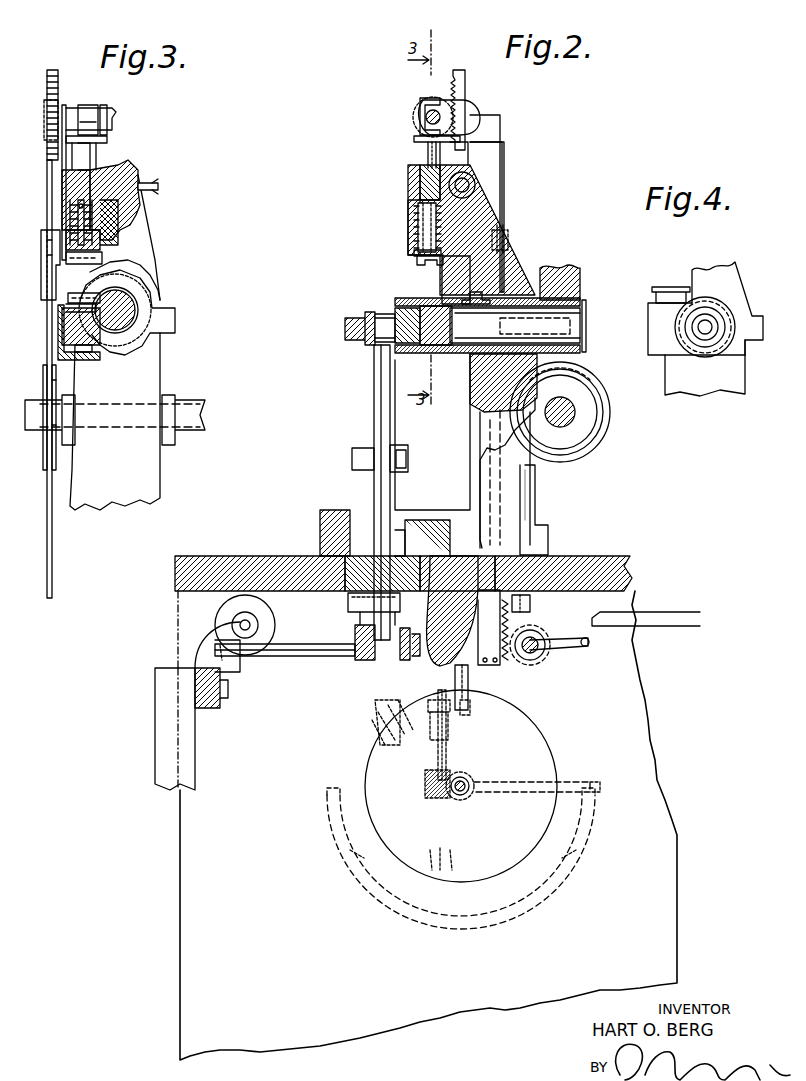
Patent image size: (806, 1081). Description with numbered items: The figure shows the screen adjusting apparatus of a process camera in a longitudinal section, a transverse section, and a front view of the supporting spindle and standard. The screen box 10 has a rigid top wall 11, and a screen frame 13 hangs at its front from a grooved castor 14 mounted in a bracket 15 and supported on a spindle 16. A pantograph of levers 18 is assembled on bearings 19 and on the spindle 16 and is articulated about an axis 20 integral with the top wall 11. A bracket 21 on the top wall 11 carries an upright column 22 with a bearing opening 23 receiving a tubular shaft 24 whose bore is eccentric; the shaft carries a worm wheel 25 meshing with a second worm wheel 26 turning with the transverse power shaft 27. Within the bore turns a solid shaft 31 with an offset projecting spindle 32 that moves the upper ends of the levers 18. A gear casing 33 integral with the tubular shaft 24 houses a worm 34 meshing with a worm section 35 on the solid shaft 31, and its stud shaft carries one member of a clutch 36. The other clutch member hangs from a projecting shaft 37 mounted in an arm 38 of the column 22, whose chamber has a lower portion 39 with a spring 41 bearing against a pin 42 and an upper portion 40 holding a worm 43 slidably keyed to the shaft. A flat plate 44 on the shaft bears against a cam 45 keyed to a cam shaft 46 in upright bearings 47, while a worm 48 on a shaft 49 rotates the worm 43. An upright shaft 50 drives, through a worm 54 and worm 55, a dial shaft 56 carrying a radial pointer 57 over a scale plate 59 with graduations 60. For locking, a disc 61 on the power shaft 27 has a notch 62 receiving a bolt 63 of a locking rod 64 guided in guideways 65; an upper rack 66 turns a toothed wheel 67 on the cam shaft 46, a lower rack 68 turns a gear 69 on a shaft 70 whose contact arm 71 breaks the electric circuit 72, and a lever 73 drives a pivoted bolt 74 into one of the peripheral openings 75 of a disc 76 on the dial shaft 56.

In FIG. 2, the screen box 10 is at (158, 629).
In FIG. 2, the top wall 11 is at (228, 556).
In FIG. 2, the screen frame 13 is at (158, 722).
In FIG. 2, the grooved castor 14 is at (222, 612).
In FIG. 2, the bracket 15 is at (225, 663).
In FIG. 2, the spindle 16 is at (292, 657).
In FIG. 2, the lever 18 is at (373, 412).
In FIG. 2, the bearing 19 is at (405, 460).
In FIG. 2, the axis 20 is at (393, 595).
In FIG. 2, the bracket 21 is at (545, 532).
In FIG. 3, the upright column 22 is at (150, 470).
In FIG. 2, the upright column 22 is at (482, 435).
In FIG. 4, the upright column 22 is at (716, 395).
In FIG. 2, the bearing opening 23 is at (468, 292).
In FIG. 2, the tubular shaft 24 is at (450, 353).
In FIG. 4, the tubular shaft 24 is at (735, 345).
In FIG. 3, the worm wheel 25 is at (150, 296).
In FIG. 2, the worm wheel 25 is at (580, 296).
In FIG. 2, the second worm wheel 26 is at (603, 420).
In FIG. 3, the power shaft 27 is at (192, 405).
In FIG. 2, the power shaft 27 is at (575, 420).
In FIG. 2, the solid shaft 31 is at (572, 318).
In FIG. 4, the solid shaft 31 is at (698, 340).
In FIG. 2, the projecting spindle 32 is at (383, 322).
In FIG. 4, the projecting spindle 32 is at (706, 322).
In FIG. 3, the gear casing 33 is at (62, 352).
In FIG. 4, the gear casing 33 is at (655, 333).
In FIG. 3, the worm 34 is at (70, 338).
In FIG. 2, the worm 34 is at (410, 353).
In FIG. 3, the worm section 35 is at (150, 348).
In FIG. 2, the worm section 35 is at (428, 353).
In FIG. 3, the clutch 36 is at (100, 266).
In FIG. 2, the clutch 36 is at (425, 270).
In FIG. 4, the clutch 36 is at (660, 286).
In FIG. 3, the projecting shaft 37 is at (125, 230).
In FIG. 2, the projecting shaft 37 is at (425, 146).
In FIG. 3, the arm 38 is at (140, 210).
In FIG. 2, the arm 38 is at (500, 200).
In FIG. 4, the arm 38 is at (740, 262).
In FIG. 3, the lower chamber portion 39 is at (70, 205).
In FIG. 2, the lower chamber portion 39 is at (414, 226).
In FIG. 3, the upper chamber portion 40 is at (62, 176).
In FIG. 2, the upper chamber portion 40 is at (415, 188).
In FIG. 3, the spring 41 is at (105, 250).
In FIG. 2, the spring 41 is at (414, 244).
In FIG. 3, the pin 42 is at (78, 218).
In FIG. 2, the pin 42 is at (414, 212).
In FIG. 3, the worm 43 is at (100, 170).
In FIG. 2, the worm 43 is at (418, 175).
In FIG. 3, the flat plate 44 is at (95, 140).
In FIG. 2, the flat plate 44 is at (425, 137).
In FIG. 3, the cam 45 is at (88, 105).
In FIG. 2, the cam 45 is at (468, 108).
In FIG. 3, the cam shaft 46 is at (112, 108).
In FIG. 2, the cam shaft 46 is at (425, 110).
In FIG. 3, the upright bearing 47 is at (64, 120).
In FIG. 2, the upright bearing 47 is at (481, 131).
In FIG. 2, the worm 48 is at (466, 168).
In FIG. 3, the shaft 49 is at (158, 185).
In FIG. 2, the shaft 49 is at (470, 185).
In FIG. 2, the upright shaft 50 is at (446, 731).
In FIG. 2, the worm 54 is at (428, 784).
In FIG. 2, the worm 55 is at (466, 798).
In FIG. 2, the dial shaft 56 is at (462, 778).
In FIG. 2, the radial pointer 57 is at (514, 784).
In FIG. 2, the scale plate 59 is at (328, 812).
In FIG. 2, the graduations 60 is at (370, 880).
In FIG. 3, the disc 61 is at (47, 378).
In FIG. 2, the disc 61 is at (598, 392).
In FIG. 3, the notch 62 is at (47, 392).
In FIG. 2, the notch 62 is at (606, 400).
In FIG. 2, the bolt 63 is at (580, 345).
In FIG. 3, the locking rod 64 is at (47, 505).
In FIG. 2, the locking rod 64 is at (506, 210).
In FIG. 3, the guideway 65 is at (44, 275).
In FIG. 2, the guideway 65 is at (510, 237).
In FIG. 3, the rack 66 is at (48, 78).
In FIG. 2, the rack 66 is at (452, 78).
In FIG. 3, the toothed wheel 67 is at (46, 119).
In FIG. 2, the toothed wheel 67 is at (428, 96).
In FIG. 2, the rack 68 is at (503, 620).
In FIG. 2, the gear 69 is at (538, 660).
In FIG. 2, the shaft 70 is at (507, 644).
In FIG. 2, the electrical contact arm 71 is at (592, 642).
In FIG. 2, the electric circuit 72 is at (626, 612).
In FIG. 2, the lever 73 is at (485, 660).
In FIG. 2, the pivoted bolt 74 is at (475, 692).
In FIG. 2, the peripheral openings 75 is at (402, 710).
In FIG. 2, the disc 76 is at (540, 740).